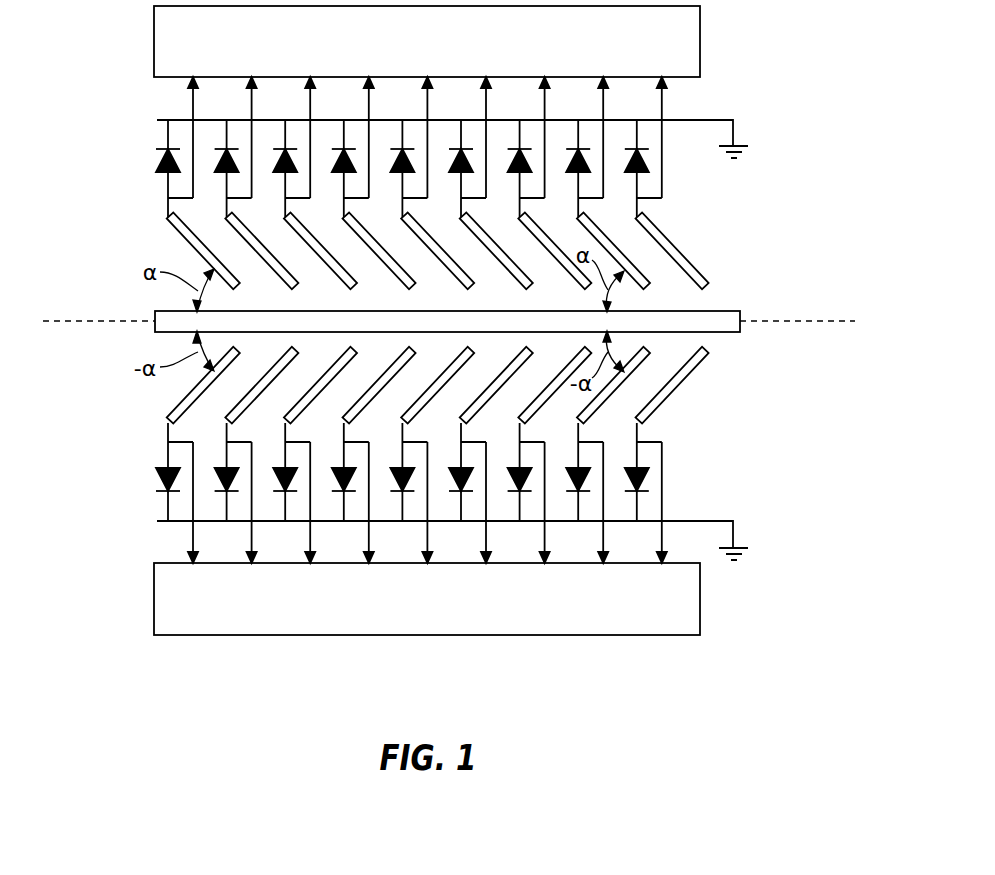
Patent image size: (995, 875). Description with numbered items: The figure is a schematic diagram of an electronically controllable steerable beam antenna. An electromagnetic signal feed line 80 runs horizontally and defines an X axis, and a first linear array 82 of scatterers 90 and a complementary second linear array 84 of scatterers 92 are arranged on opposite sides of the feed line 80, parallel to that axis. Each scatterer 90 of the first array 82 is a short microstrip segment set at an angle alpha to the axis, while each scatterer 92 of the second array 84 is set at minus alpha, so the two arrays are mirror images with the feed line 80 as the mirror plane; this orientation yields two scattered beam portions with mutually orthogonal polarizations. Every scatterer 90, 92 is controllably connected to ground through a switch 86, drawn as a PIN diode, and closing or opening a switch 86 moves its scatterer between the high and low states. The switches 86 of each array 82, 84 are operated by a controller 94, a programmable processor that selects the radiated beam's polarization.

The electromagnetic signal feed line 80 is at (724, 311).
The first linear array 82 is at (724, 242).
The second linear array 84 is at (724, 399).
The switch 86 is at (156, 160).
The scatterer 90 is at (230, 228).
The scatterer 92 is at (232, 405).
The controller 94 is at (154, 41).